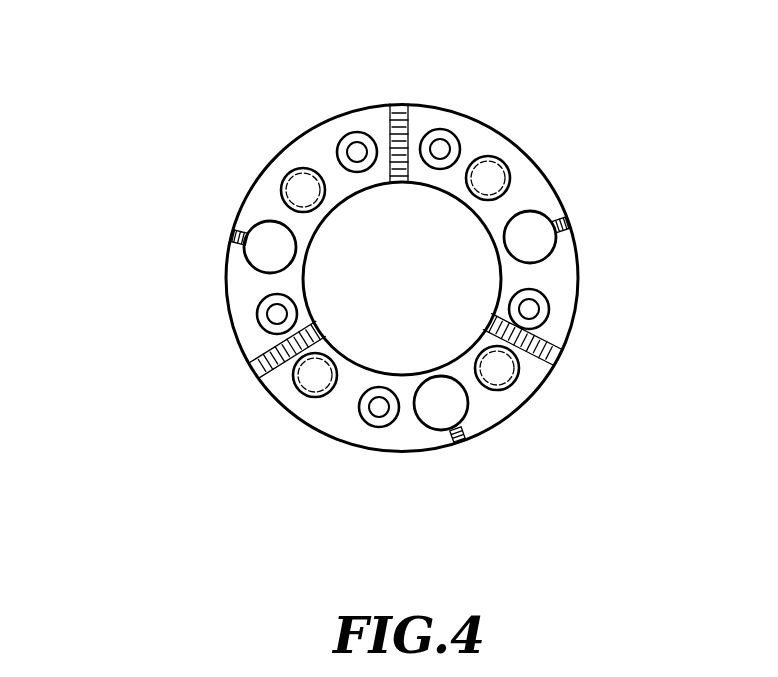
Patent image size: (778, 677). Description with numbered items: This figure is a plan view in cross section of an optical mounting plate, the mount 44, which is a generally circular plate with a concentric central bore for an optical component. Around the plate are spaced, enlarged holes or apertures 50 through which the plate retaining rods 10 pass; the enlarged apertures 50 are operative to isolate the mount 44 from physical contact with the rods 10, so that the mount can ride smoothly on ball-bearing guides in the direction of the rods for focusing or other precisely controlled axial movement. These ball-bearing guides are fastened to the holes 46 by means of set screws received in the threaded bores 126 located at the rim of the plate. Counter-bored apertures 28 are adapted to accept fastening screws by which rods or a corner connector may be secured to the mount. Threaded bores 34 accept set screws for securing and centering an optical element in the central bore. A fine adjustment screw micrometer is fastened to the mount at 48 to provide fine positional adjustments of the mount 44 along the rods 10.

The plate retaining rods 10 is at (303, 190).
The counter-bored apertures 28 is at (443, 156).
The second threaded apertures or bores 34 is at (398, 107).
The mount 44 is at (322, 138).
The holes 46 is at (265, 265).
The micrometer fastening location 48 is at (463, 400).
The spaced, enlarged holes or apertures 50 is at (283, 200).
The threaded bores 126 is at (232, 235).